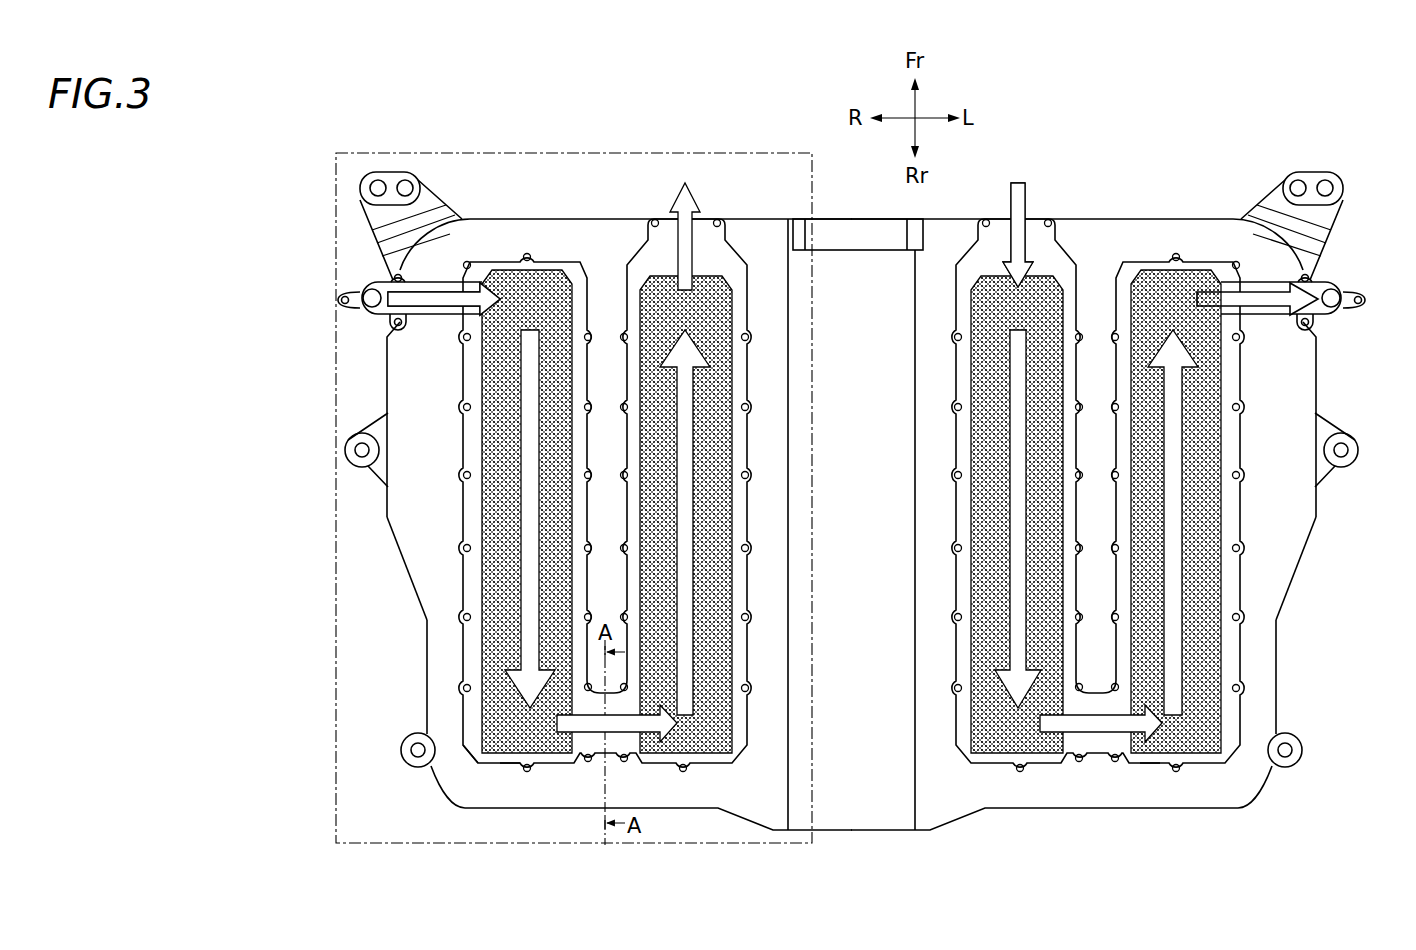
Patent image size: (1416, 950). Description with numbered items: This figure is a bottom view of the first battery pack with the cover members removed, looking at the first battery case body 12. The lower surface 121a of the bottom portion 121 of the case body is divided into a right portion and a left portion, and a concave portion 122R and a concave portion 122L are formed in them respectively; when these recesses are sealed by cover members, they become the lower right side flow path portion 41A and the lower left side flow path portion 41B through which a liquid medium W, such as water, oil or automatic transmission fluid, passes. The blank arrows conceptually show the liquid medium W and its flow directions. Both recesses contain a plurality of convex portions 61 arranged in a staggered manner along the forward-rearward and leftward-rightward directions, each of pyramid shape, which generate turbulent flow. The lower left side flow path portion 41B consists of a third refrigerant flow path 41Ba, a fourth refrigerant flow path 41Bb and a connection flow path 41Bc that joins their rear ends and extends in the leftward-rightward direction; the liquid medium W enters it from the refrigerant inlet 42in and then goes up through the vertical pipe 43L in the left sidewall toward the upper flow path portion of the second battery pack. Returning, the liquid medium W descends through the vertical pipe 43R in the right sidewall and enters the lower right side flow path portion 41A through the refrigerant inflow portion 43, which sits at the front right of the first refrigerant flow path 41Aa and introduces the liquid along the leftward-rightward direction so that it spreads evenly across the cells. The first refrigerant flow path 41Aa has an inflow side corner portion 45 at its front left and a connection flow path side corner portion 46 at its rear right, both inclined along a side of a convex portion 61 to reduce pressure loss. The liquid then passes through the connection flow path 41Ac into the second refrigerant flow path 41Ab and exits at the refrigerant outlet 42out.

The first battery case body 12 is at (816, 469).
The inflow side corner portion 45 is at (765, 495).
The connection flow path side corner portion 46 is at (478, 754).
The convex portion 61 is at (482, 532).
The bottom portion 121 is at (816, 673).
The lower surface 121a is at (417, 558).
The concave portion 122R is at (512, 766).
The concave portion 122L is at (1150, 768).
The lower right side flow path portion 41A is at (567, 578).
The first refrigerant flow path 41Aa is at (478, 657).
The second refrigerant flow path 41Ab is at (735, 514).
The connection flow path 41Ac is at (607, 752).
The lower left side flow path portion 41B is at (1114, 565).
The third refrigerant flow path 41Ba is at (975, 530).
The fourth refrigerant flow path 41Bb is at (1225, 516).
The connection flow path 41Bc is at (1078, 757).
The refrigerant outlet 42out is at (698, 226).
The refrigerant inlet 42in is at (1005, 222).
The refrigerant inflow portion 43 is at (455, 330).
The vertical pipe 43R is at (378, 304).
The vertical pipe 43L is at (1343, 293).
The liquid medium W is at (425, 282).